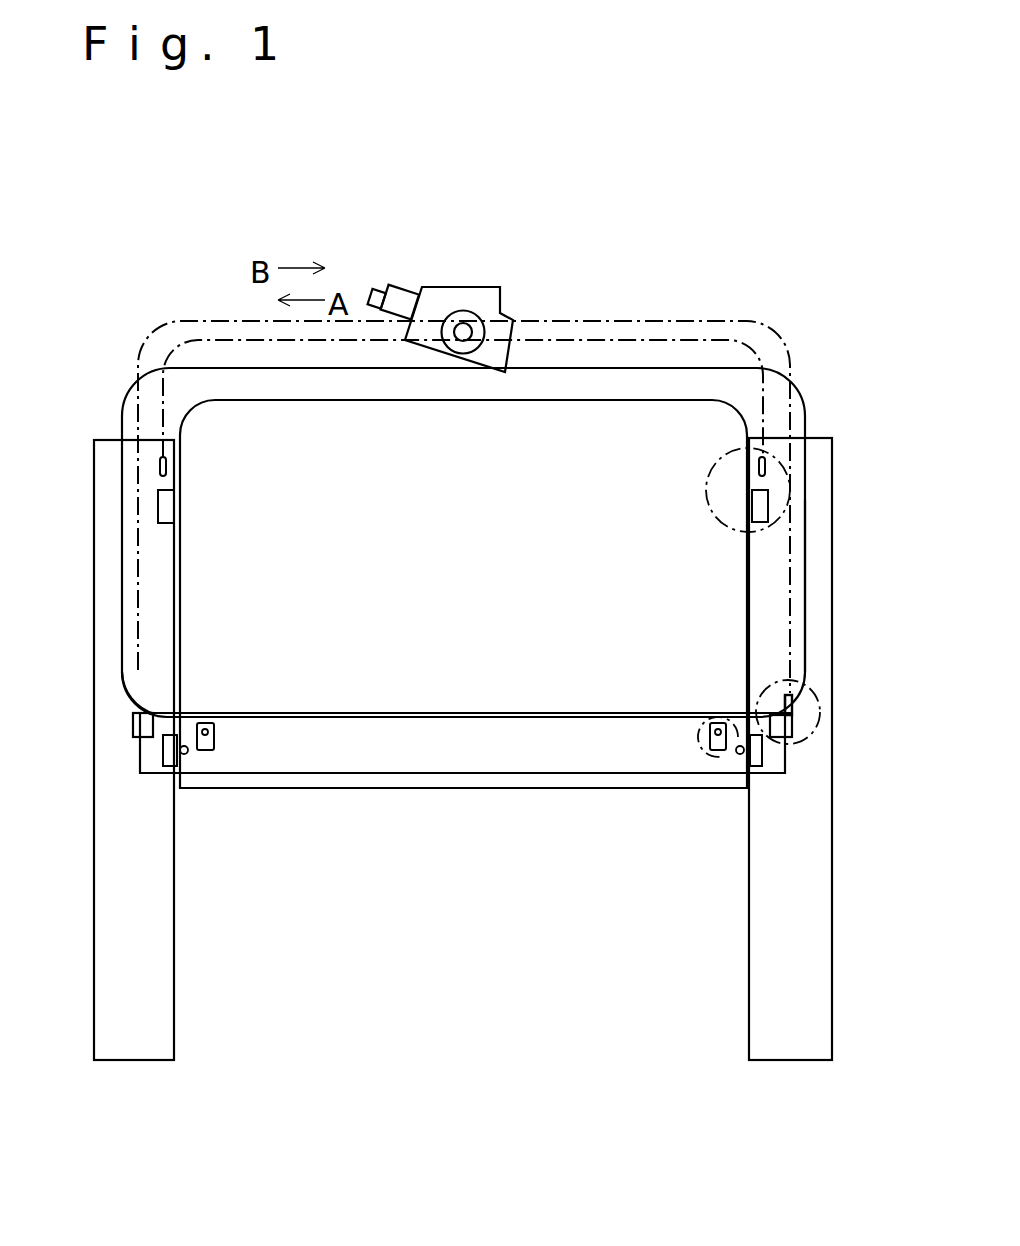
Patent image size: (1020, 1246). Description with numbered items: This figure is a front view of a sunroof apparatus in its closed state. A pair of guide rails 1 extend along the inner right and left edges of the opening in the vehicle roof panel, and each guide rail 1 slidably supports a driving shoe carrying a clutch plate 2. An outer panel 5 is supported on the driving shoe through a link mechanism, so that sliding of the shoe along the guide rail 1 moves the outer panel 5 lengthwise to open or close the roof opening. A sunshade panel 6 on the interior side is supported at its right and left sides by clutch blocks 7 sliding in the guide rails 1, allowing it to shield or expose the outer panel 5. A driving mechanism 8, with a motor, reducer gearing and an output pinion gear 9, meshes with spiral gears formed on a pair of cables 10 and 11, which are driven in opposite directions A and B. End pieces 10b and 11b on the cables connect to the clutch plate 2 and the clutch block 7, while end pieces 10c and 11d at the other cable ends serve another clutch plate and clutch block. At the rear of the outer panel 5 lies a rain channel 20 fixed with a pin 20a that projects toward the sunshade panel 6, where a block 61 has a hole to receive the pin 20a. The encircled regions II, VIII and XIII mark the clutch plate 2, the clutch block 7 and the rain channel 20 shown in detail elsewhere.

The guide rail 1 is at (108, 867).
The clutch plate 2 is at (133, 723).
The outer panel 5 is at (607, 383).
The sunshade panel 6 is at (257, 462).
The clutch block 7 is at (163, 510).
The driving mechanism 8 is at (471, 281).
The output pinion gear 9 is at (463, 327).
The cable 10 is at (200, 320).
The end piece 10b is at (767, 467).
The end piece 10c is at (135, 704).
The cable 11 is at (698, 320).
The end piece 11b is at (793, 705).
The end piece 11d is at (160, 464).
The rain channel 20 is at (510, 755).
The pin 20a is at (205, 736).
The block 61 is at (208, 748).
The section VIII indicator VIII is at (769, 454).
The section II indicator II is at (808, 687).
The section XIII indicator XIII is at (704, 754).